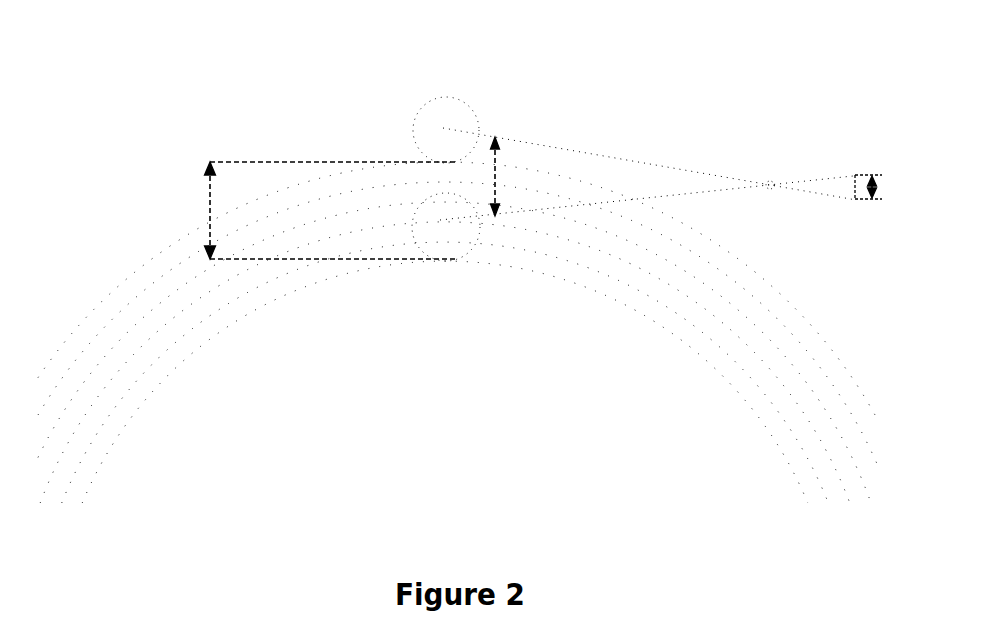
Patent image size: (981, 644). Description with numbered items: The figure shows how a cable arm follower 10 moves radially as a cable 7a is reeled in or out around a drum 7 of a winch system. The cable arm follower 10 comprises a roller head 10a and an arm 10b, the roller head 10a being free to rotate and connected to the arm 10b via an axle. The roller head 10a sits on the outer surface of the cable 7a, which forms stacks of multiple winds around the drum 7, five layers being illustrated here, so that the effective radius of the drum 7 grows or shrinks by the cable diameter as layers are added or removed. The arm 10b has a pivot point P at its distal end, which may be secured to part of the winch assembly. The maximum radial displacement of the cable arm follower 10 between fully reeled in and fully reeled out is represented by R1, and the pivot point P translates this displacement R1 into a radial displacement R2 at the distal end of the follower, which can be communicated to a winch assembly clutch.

The drum 7 is at (469, 332).
The cable 7a is at (780, 293).
The cable arm follower 10 is at (632, 142).
The roller head 10a is at (440, 97).
The arm 10b is at (637, 160).
The pivot point P is at (769, 182).
The maximum radial displacement R1 is at (316, 210).
The radial displacement R2 is at (884, 191).